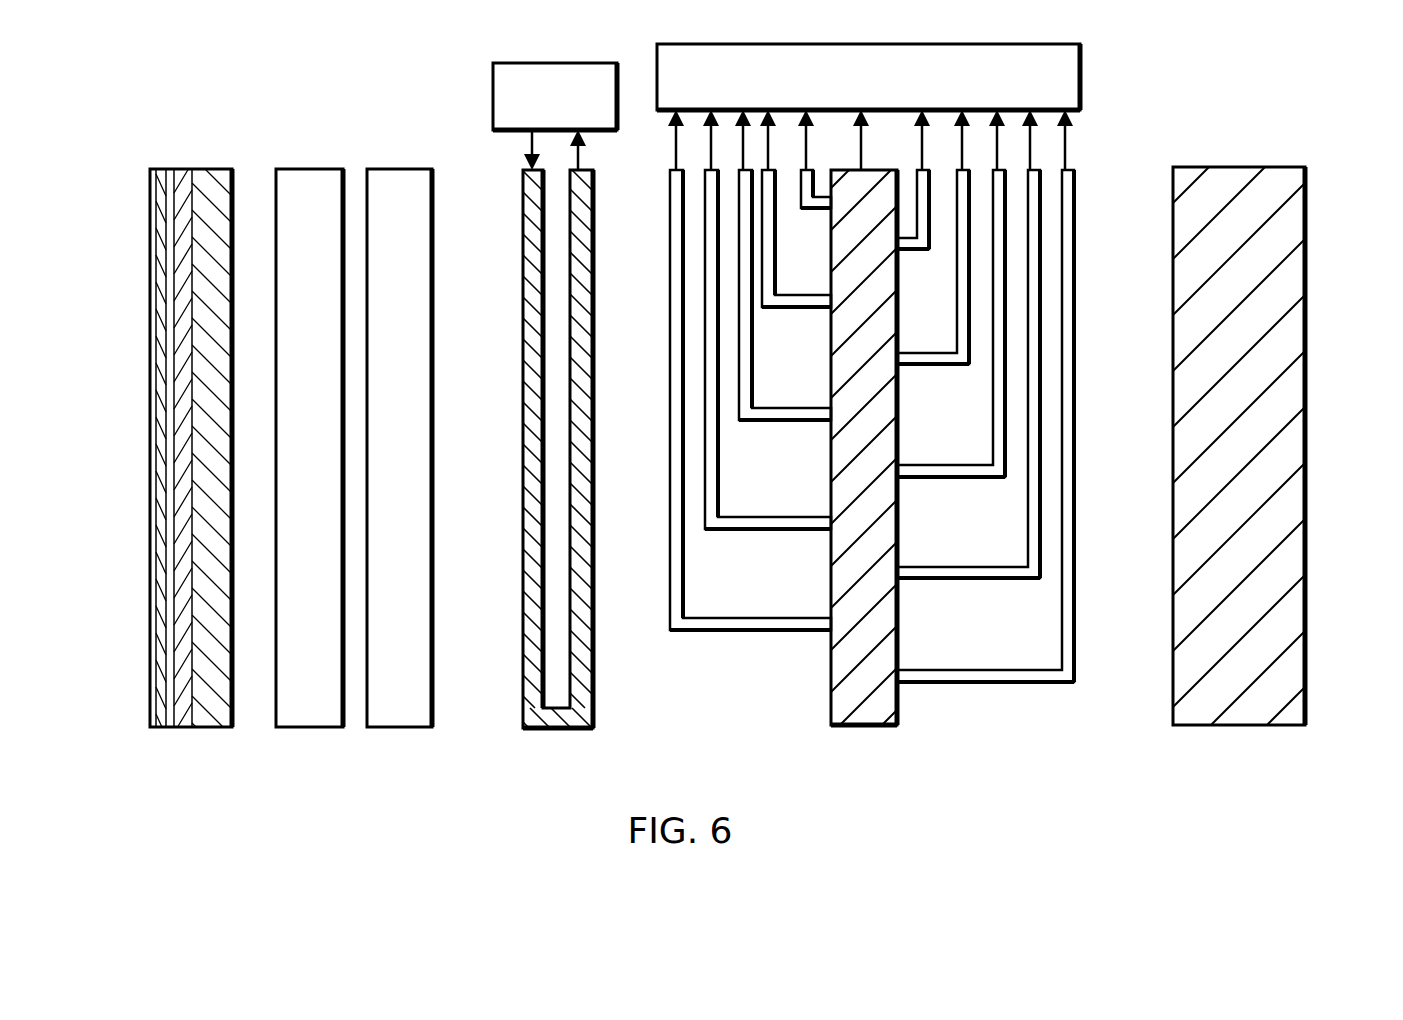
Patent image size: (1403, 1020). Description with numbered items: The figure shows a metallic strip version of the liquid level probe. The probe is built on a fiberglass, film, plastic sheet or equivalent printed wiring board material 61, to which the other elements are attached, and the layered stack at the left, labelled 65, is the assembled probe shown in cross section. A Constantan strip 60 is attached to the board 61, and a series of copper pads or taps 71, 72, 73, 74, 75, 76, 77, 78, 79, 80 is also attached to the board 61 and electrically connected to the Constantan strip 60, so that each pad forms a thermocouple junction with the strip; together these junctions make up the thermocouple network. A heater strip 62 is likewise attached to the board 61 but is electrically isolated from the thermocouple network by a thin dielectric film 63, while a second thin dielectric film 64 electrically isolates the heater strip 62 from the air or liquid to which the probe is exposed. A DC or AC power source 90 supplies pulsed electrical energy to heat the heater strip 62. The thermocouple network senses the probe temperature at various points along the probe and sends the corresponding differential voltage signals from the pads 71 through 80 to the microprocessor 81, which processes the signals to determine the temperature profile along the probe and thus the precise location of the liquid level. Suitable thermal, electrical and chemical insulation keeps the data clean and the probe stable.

The Constantan strip 60 is at (188, 727).
The printed wiring board material 61 is at (202, 169).
The heater strip 62 is at (162, 169).
The thin dielectric film 63 is at (170, 169).
The second thin dielectric film 64 is at (151, 168).
The layered sensor structure 65 is at (147, 486).
The Copper pad 71 is at (820, 208).
The Copper pad 72 is at (912, 249).
The Copper pad 73 is at (796, 307).
The Copper pad 74 is at (940, 364).
The Copper pad 75 is at (780, 420).
The Copper pad 76 is at (955, 477).
The Copper pad 77 is at (773, 529).
The Copper pad 78 is at (975, 578).
The Copper pad 79 is at (755, 630).
The Copper pad 80 is at (988, 682).
The microprocessor 81 is at (1080, 75).
The power source 90 is at (546, 63).